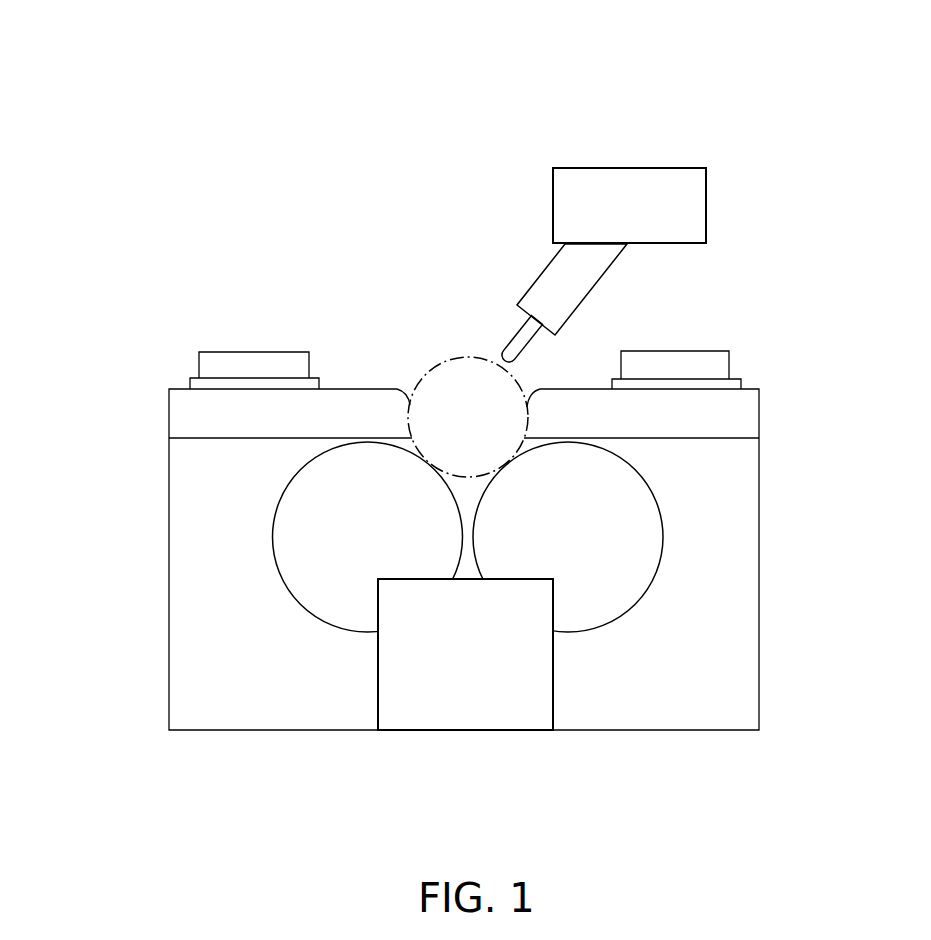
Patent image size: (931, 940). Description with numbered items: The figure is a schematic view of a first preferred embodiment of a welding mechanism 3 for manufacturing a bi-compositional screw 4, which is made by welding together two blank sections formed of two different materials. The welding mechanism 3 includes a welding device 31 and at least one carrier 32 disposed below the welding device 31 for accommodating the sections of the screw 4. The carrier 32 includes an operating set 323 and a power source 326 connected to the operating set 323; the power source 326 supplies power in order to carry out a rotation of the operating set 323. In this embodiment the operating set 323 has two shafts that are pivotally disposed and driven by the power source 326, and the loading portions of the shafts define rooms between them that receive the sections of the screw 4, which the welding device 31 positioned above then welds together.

The welding mechanism 3 is at (166, 147).
The welding device 31 is at (682, 206).
The carrier 32 is at (169, 405).
The operating set 323 is at (257, 513).
The power source 326 is at (515, 698).
The bi-compositional screw 4 is at (448, 360).